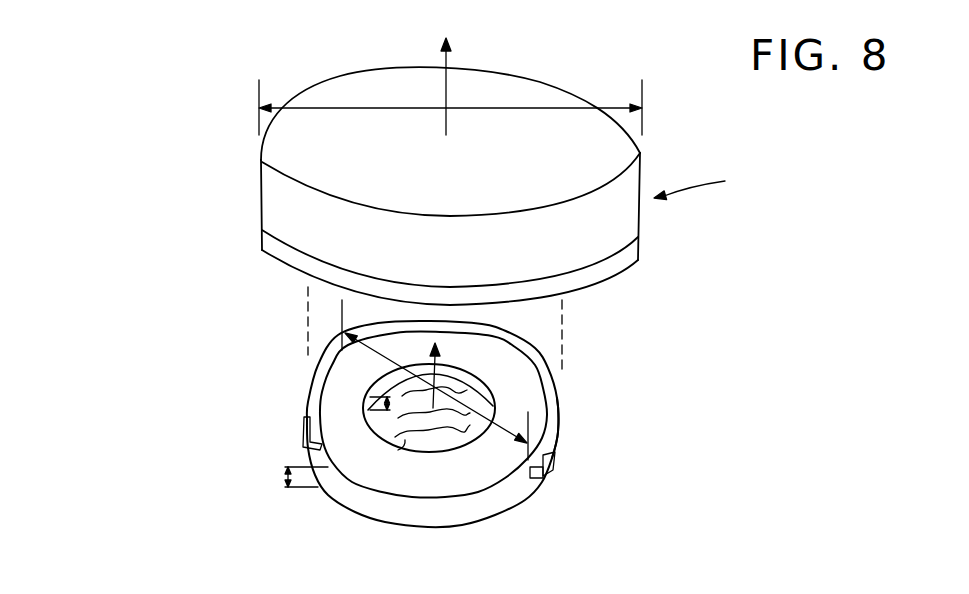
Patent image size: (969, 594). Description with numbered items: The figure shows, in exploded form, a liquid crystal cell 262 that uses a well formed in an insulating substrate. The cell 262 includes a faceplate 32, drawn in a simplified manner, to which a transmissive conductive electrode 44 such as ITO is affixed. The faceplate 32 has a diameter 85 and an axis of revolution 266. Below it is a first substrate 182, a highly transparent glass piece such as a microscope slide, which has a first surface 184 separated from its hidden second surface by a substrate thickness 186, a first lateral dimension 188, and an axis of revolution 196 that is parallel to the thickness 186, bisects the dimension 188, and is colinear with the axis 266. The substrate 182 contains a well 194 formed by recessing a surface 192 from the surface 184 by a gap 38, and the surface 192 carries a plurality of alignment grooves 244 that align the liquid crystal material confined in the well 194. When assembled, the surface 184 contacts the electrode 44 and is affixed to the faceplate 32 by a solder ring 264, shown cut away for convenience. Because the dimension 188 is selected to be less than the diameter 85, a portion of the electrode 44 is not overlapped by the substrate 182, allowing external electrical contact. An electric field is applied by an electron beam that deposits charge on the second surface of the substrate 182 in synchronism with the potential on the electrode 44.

The faceplate 32 is at (625, 187).
The transmissive conductive electrode 44 is at (625, 255).
The diameter 85 is at (540, 108).
The axis of revolution 266 is at (450, 90).
The liquid crystal cell 262 is at (717, 183).
The first surface 184 is at (505, 370).
The surface 192 is at (475, 408).
The gap 38 is at (380, 413).
The alignment grooves 244 is at (398, 450).
The well 194 is at (370, 401).
The axis of revolution 196 is at (442, 358).
The first lateral dimension 188 is at (340, 367).
The substrate thickness 186 is at (283, 478).
The first substrate 182 is at (530, 490).
The solder ring 264 is at (555, 415).